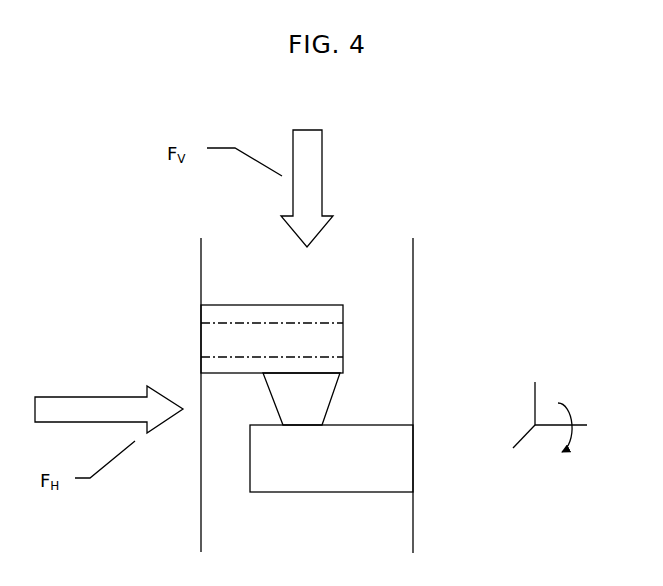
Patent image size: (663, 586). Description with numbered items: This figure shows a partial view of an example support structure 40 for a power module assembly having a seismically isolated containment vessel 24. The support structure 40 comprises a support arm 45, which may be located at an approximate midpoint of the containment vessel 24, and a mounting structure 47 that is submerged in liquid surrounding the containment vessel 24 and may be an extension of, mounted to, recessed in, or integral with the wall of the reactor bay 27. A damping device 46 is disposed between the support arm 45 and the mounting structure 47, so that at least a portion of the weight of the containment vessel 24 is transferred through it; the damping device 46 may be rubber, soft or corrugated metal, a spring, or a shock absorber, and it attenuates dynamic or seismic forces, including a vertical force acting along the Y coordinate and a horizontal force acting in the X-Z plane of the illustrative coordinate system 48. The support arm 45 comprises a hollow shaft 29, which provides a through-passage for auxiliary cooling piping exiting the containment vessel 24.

The containment vessel 24 is at (149, 382).
The reactor bay 27 is at (480, 395).
The hollow shaft 29 is at (230, 336).
The support structure 40 is at (413, 170).
The support arm 45 is at (287, 314).
The damping device 46 is at (377, 378).
The mounting structure 47 is at (331, 482).
The coordinate system 48 is at (586, 372).